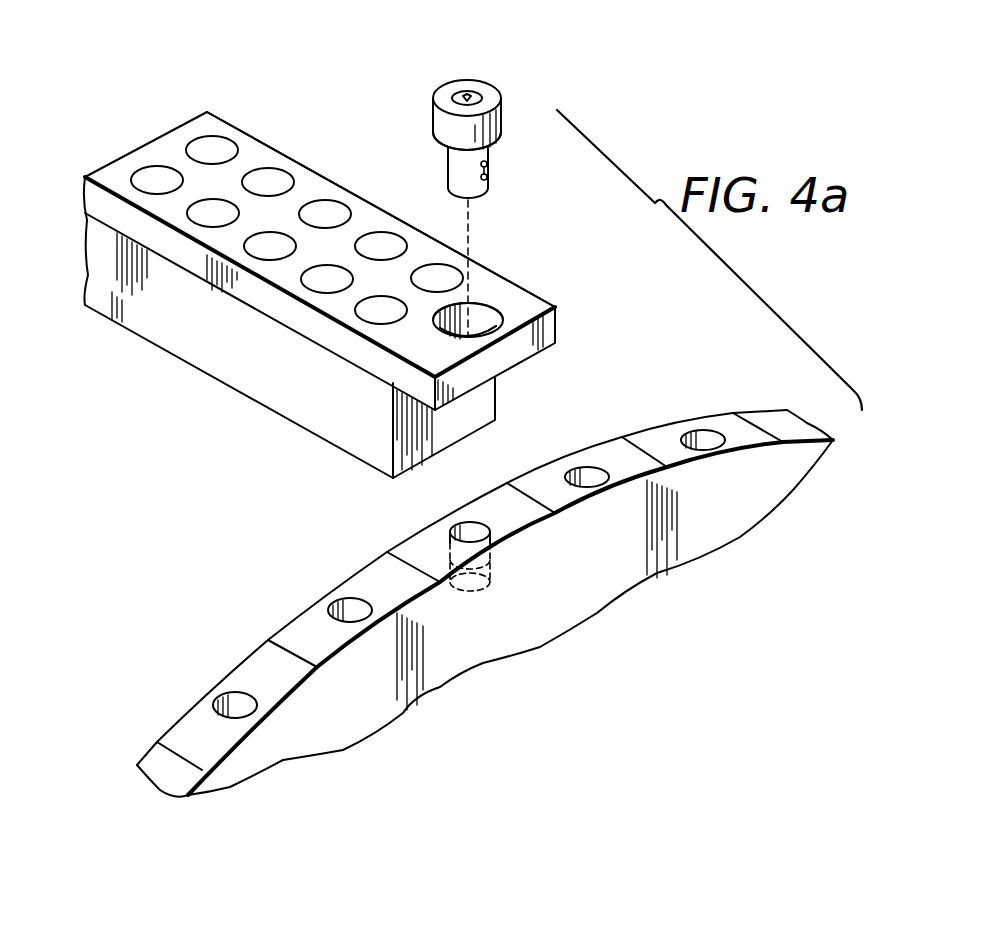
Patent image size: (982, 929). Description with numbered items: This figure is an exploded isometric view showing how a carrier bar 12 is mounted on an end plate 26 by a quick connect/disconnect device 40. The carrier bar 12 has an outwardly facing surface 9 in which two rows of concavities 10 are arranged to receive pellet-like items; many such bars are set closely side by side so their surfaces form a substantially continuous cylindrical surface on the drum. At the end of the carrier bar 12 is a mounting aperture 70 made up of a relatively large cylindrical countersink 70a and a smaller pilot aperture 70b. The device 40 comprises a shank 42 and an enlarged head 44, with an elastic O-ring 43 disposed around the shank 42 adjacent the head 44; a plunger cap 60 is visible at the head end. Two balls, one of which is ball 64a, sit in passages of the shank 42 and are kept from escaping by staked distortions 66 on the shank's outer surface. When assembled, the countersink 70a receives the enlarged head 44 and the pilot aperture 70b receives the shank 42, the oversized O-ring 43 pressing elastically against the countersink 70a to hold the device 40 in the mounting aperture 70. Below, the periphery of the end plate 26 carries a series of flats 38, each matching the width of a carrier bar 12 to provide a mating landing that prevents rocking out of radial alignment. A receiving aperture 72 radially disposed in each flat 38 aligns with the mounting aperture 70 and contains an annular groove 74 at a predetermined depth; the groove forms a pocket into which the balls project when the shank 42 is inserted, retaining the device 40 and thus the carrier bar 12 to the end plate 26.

The outwardly facing surface 9 is at (290, 268).
The concavities 10 is at (143, 173).
The carrier bar 12 is at (205, 122).
The end plate 26 is at (722, 513).
The flat 38 is at (297, 623).
The quick connect/disconnect device 40 is at (482, 172).
The shank 42 is at (455, 172).
The O-ring 43 is at (437, 137).
The enlarged head 44 is at (440, 95).
The plunger cap 60 is at (470, 95).
The ball 64a is at (490, 180).
The distortions 66 is at (488, 166).
The mounting aperture 70 is at (427, 333).
The cylindrical countersink 70a is at (485, 307).
The pilot aperture 70b is at (490, 332).
The receiving aperture 72 is at (450, 532).
The annular groove 74 is at (487, 567).